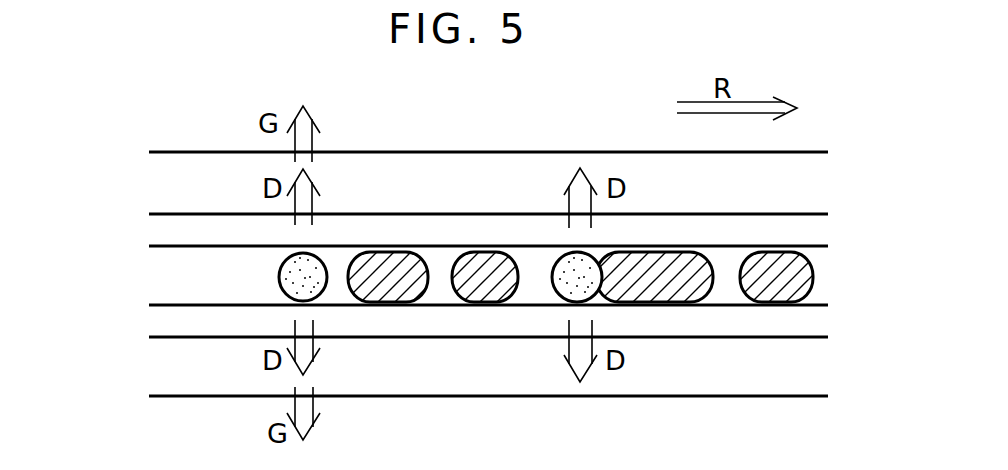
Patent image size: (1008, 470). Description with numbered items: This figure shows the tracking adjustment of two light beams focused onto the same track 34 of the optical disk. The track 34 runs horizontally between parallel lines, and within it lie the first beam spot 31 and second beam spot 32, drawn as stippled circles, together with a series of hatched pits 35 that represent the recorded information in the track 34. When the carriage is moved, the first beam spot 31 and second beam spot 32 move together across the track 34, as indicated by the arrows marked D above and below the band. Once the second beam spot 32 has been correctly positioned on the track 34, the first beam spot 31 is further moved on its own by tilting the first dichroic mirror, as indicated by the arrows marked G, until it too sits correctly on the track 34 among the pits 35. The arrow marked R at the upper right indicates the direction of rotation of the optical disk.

The first beam spot 31 is at (283, 292).
The second beam spot 32 is at (562, 295).
The track 34 is at (446, 246).
The pits 35 is at (378, 302).